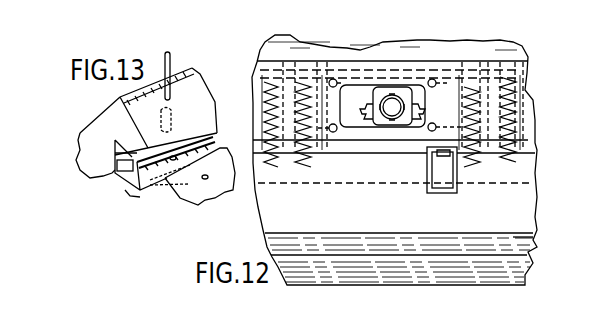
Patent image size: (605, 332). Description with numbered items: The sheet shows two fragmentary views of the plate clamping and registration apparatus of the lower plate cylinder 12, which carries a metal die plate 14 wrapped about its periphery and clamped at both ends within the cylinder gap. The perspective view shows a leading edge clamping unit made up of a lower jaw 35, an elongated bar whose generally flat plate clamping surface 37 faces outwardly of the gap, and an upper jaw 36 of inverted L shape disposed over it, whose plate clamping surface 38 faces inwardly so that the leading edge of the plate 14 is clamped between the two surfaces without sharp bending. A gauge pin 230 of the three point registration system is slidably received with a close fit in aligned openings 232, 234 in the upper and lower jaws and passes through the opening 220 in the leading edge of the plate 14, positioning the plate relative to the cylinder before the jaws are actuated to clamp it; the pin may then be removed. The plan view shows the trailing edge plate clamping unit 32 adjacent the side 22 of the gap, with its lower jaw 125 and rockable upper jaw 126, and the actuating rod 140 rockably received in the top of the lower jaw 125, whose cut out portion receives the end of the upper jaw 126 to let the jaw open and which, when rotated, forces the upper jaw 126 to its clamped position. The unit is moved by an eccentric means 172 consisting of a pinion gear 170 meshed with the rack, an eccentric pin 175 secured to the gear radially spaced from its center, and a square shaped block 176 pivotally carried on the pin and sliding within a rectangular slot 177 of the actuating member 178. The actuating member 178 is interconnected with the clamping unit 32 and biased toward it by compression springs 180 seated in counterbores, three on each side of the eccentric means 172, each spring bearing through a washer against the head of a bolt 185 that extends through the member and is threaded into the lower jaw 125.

In FIG. 12, the lower plate cylinder 12 is at (525, 285).
In FIG. 13, the metal die plate 14 is at (190, 186).
In FIG. 12, the side of gap 22 is at (520, 283).
In FIG. 12, the plate clamping unit 32 is at (514, 237).
In FIG. 13, the lower jaw 35 is at (208, 142).
In FIG. 13, the upper jaw 36 is at (103, 124).
In FIG. 13, the plate clamping surface 37 is at (142, 166).
In FIG. 13, the plate clamping surface 38 is at (115, 155).
In FIG. 12, the lower jaw 125 is at (528, 150).
In FIG. 12, the upper jaw 126 is at (522, 202).
In FIG. 12, the actuating rod 140 is at (528, 174).
In FIG. 12, the pinion gear 170 is at (353, 127).
In FIG. 12, the eccentric means 172 is at (412, 104).
In FIG. 12, the eccentric pin 175 is at (405, 100).
In FIG. 12, the square shaped block 176 is at (388, 95).
In FIG. 12, the rectangular slot 177 is at (353, 94).
In FIG. 12, the actuating member 178 is at (534, 120).
In FIG. 12, the compression springs 180 is at (530, 98).
In FIG. 12, the bolt 185 is at (532, 53).
In FIG. 13, the opening 220 is at (212, 192).
In FIG. 13, the gauge pin 230 is at (176, 51).
In FIG. 13, the opening 232 is at (178, 112).
In FIG. 13, the opening 234 is at (126, 195).